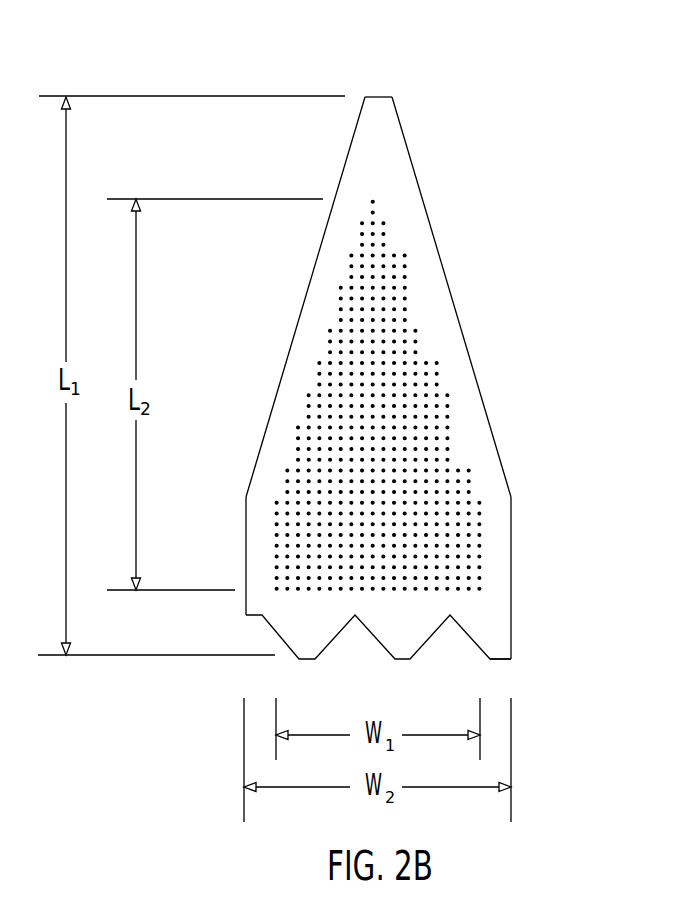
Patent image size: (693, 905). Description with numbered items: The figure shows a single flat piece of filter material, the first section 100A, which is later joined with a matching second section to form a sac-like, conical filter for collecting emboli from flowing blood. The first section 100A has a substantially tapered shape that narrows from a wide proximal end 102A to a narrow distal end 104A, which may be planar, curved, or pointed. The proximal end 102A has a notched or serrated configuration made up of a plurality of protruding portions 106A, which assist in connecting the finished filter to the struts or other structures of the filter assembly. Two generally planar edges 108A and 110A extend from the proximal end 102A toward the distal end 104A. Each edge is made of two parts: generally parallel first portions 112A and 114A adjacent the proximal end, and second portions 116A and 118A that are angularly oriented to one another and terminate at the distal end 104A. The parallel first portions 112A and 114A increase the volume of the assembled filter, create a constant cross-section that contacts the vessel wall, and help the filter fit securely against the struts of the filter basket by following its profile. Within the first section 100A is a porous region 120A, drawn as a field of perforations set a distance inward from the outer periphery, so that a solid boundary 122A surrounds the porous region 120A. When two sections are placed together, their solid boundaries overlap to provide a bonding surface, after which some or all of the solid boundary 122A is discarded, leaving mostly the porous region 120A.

The first section 100A is at (482, 149).
The proximal end 102A is at (546, 652).
The distal end 104A is at (375, 76).
The protruding portions 106A is at (473, 643).
The edge 108A is at (243, 390).
The edge 110A is at (484, 296).
The first portion 112A is at (246, 552).
The first portion 114A is at (512, 555).
The second portion 116A is at (319, 252).
The second portion 118A is at (435, 237).
The porous region 120A is at (427, 407).
The solid boundary 122A is at (477, 432).